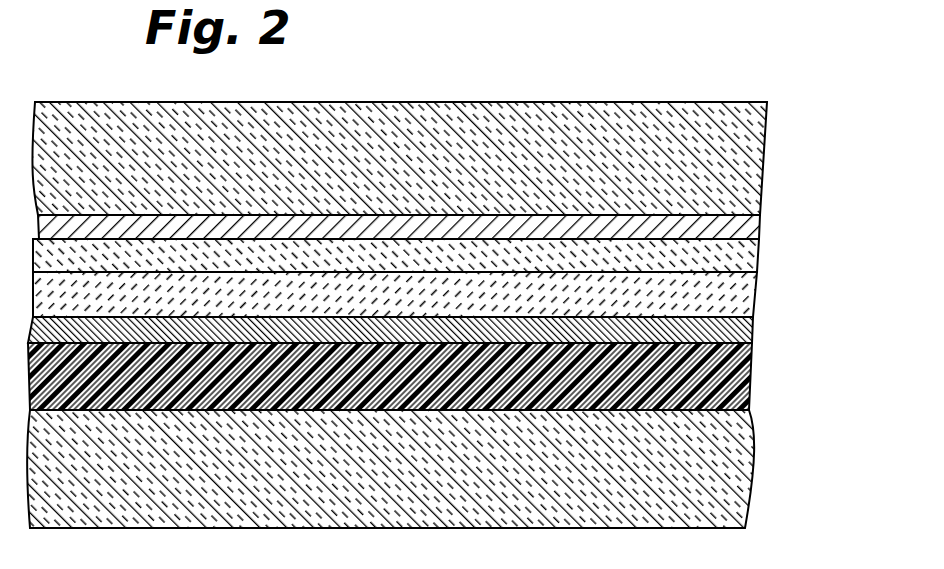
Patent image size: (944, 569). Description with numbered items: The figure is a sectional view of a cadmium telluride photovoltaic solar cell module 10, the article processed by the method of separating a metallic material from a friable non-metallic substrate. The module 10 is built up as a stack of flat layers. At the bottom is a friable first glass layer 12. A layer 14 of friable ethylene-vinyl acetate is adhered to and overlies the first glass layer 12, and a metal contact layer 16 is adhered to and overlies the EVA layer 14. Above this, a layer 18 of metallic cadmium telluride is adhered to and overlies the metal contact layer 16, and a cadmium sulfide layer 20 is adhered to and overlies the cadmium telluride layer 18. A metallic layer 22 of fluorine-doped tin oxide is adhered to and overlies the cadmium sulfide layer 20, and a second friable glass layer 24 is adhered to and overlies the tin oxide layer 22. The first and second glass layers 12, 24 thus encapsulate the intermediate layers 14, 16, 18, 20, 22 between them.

The solar cell module 10 is at (788, 98).
The first glass layer 12 is at (738, 470).
The EVA layer 14 is at (737, 378).
The metal contact layer 16 is at (737, 335).
The cadmium telluride layer 18 is at (737, 297).
The cadmium sulfide layer 20 is at (737, 262).
The tin oxide layer 22 is at (740, 233).
The second glass layer 24 is at (740, 157).